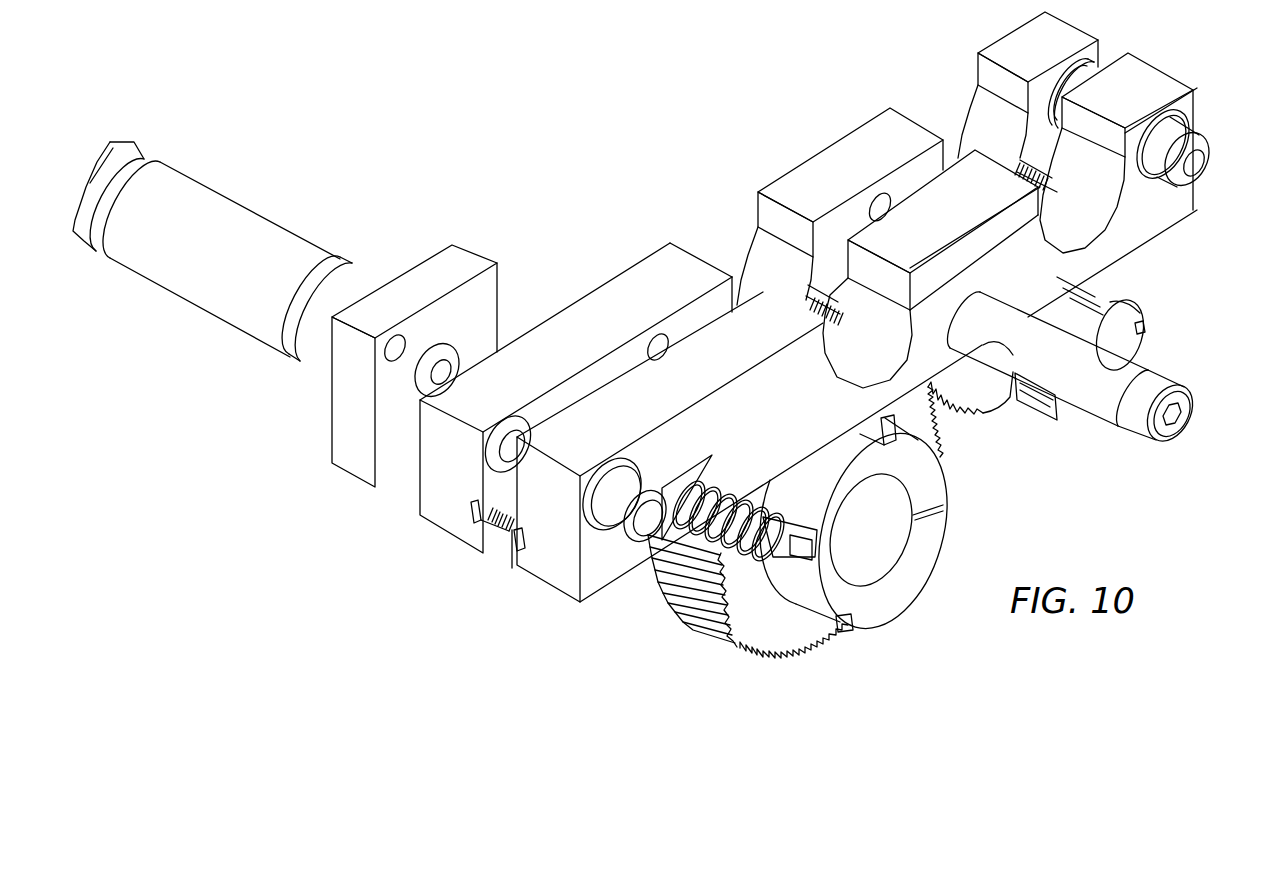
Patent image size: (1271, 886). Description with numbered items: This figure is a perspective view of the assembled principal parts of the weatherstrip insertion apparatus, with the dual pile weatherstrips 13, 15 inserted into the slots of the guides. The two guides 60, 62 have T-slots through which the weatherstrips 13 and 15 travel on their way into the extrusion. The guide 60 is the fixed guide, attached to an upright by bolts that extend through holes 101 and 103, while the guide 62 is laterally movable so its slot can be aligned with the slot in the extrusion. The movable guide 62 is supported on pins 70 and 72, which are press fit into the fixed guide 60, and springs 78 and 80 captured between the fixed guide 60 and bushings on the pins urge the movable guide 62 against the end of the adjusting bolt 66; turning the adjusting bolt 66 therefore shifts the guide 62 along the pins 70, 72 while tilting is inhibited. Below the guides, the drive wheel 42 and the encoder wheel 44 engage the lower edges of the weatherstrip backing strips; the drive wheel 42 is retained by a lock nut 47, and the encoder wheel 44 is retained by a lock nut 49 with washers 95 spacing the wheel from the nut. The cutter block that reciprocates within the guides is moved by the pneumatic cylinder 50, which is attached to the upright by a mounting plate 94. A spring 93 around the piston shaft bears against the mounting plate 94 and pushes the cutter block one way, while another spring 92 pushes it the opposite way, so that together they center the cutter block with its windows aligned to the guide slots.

The pneumatic cylinder 50 is at (257, 230).
The mounting plate 94 is at (413, 282).
The spring 93 is at (447, 348).
The weatherstrip 15 is at (470, 512).
The weatherstrip 13 is at (517, 545).
The spring 78 is at (512, 405).
The hole 101 is at (663, 337).
The guide 62 is at (1147, 232).
The pin 70 is at (625, 540).
The spring 92 is at (740, 557).
The drive wheel 42 is at (758, 645).
The encoder wheel 44 is at (983, 412).
The washers 95 is at (958, 367).
The lock nut 47 is at (910, 570).
The guide 60 is at (798, 182).
The hole 103 is at (887, 197).
The spring 80 is at (1080, 62).
The pin 72 is at (1177, 125).
The adjusting bolt 66 is at (1177, 437).
The lock nut 49 is at (1137, 313).